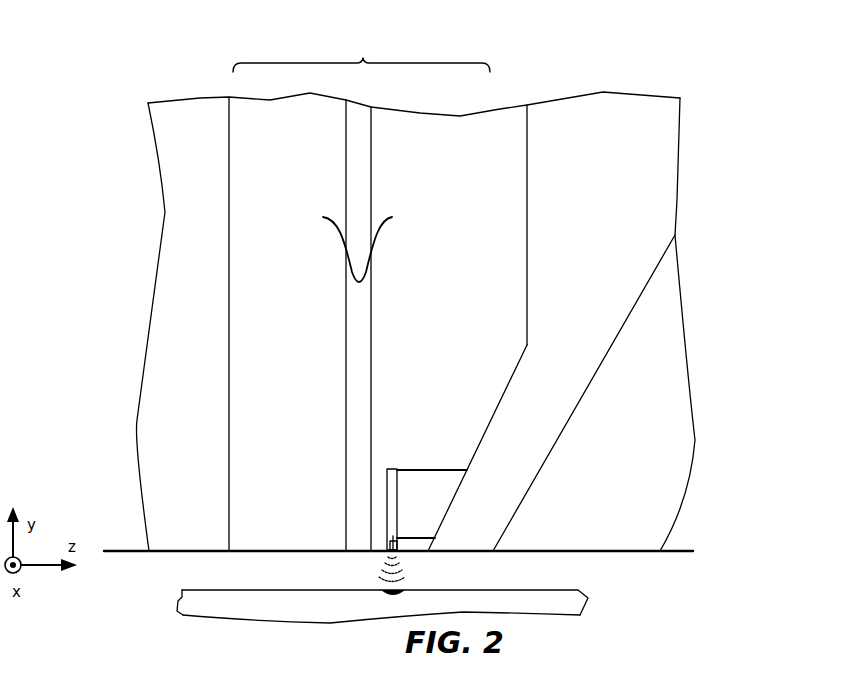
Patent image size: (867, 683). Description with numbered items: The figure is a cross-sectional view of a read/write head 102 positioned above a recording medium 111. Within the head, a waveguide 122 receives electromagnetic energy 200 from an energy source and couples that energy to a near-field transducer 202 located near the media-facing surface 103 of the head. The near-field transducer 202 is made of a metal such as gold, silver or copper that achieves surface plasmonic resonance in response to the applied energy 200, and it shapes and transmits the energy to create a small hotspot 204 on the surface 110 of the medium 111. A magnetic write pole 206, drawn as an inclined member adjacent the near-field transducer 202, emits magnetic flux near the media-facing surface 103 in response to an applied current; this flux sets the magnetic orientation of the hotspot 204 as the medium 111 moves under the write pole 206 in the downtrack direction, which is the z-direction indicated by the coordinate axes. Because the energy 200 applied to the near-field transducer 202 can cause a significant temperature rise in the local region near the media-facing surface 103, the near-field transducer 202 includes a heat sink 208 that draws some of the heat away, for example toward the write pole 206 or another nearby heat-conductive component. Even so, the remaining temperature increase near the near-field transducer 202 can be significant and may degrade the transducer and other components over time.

The read/write head 102 is at (137, 74).
The waveguide 122 is at (359, 292).
The electromagnetic energy 200 is at (343, 233).
The near-field transducer 202 is at (390, 553).
The hotspot 204 is at (393, 598).
The magnetic write pole 206 is at (577, 405).
The heat sink 208 is at (413, 532).
The surface of medium 110 is at (553, 588).
The medium 111 is at (560, 600).
The media-facing surface 103 is at (683, 553).